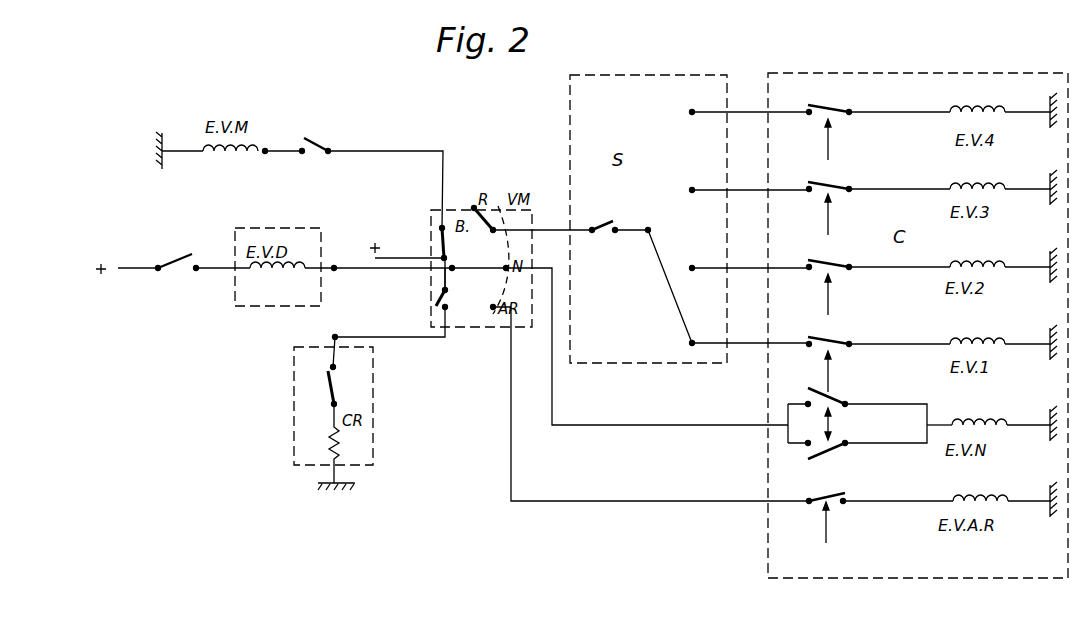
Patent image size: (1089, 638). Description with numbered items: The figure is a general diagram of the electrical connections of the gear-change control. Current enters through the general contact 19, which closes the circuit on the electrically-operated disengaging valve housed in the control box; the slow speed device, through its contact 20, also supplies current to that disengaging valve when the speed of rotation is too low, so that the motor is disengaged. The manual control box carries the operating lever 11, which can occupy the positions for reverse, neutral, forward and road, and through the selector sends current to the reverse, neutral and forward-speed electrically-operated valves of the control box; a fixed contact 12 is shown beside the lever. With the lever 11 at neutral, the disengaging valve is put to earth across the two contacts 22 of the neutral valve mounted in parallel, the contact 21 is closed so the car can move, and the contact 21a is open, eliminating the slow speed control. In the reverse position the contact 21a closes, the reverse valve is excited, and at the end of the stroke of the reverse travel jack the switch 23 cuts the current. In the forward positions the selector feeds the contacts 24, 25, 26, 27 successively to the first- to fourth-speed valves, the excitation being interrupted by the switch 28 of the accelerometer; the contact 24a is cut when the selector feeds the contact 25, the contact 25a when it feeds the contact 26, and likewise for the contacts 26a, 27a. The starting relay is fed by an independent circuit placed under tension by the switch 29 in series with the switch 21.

The operating lever 11 is at (472, 258).
The fixed contact of changeover switch 12 is at (454, 272).
The general contact 19 is at (177, 273).
The contact of the slow speed device 20 is at (327, 393).
The contact 21 is at (437, 240).
The contact 21a is at (440, 297).
The contacts of the electrically-operated valve EVN 22 is at (824, 465).
The switch 23 is at (816, 498).
The contact 24 is at (750, 333).
The contact 24a is at (829, 354).
The contact 25 is at (741, 258).
The contact 25a is at (829, 277).
The contact 26 is at (734, 187).
The contact 26a is at (829, 198).
The contact 27 is at (737, 104).
The contact 27a is at (829, 122).
The switch of the accelerometer 28 is at (600, 216).
The switch 29 is at (348, 140).